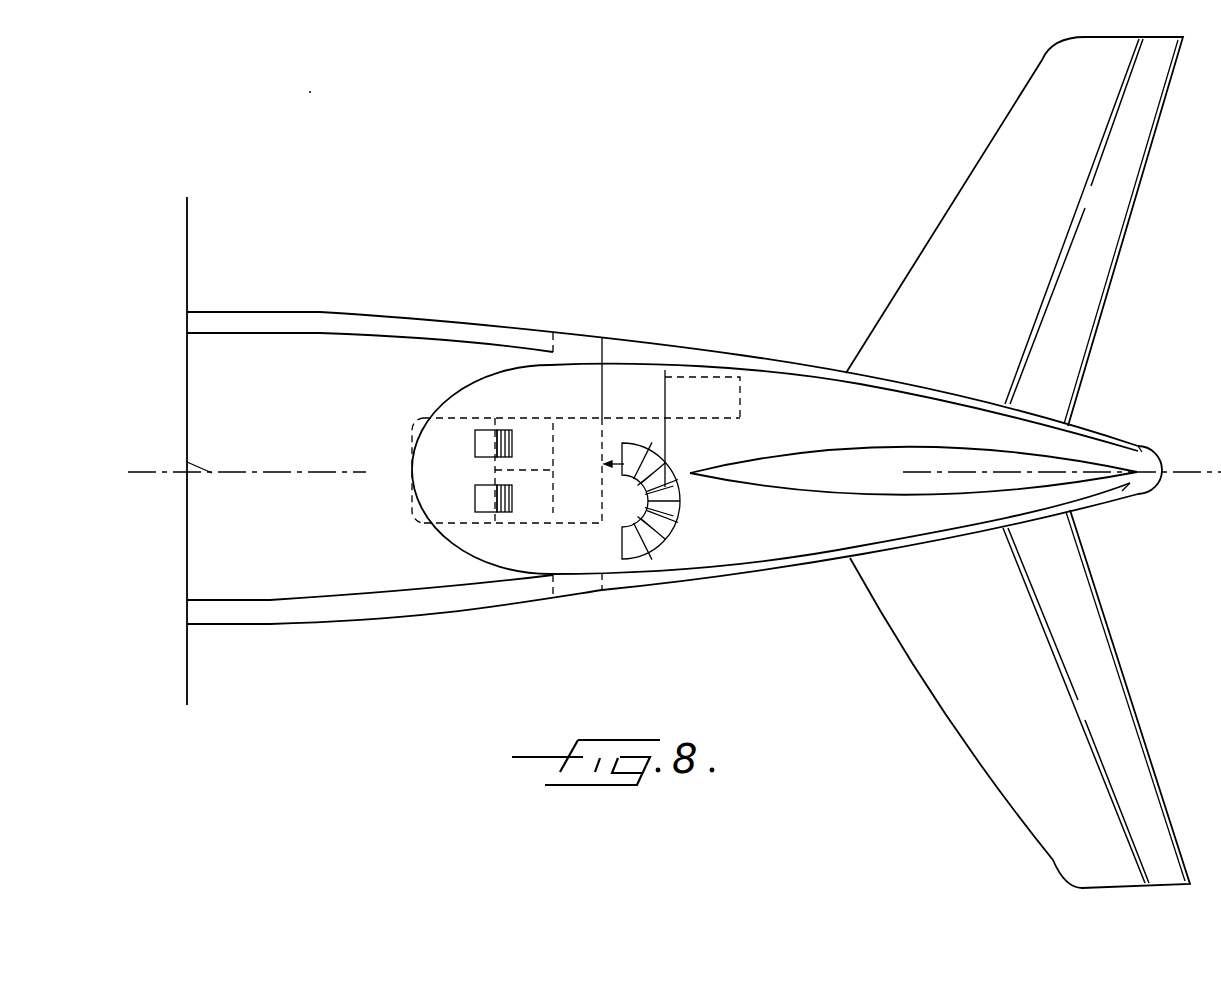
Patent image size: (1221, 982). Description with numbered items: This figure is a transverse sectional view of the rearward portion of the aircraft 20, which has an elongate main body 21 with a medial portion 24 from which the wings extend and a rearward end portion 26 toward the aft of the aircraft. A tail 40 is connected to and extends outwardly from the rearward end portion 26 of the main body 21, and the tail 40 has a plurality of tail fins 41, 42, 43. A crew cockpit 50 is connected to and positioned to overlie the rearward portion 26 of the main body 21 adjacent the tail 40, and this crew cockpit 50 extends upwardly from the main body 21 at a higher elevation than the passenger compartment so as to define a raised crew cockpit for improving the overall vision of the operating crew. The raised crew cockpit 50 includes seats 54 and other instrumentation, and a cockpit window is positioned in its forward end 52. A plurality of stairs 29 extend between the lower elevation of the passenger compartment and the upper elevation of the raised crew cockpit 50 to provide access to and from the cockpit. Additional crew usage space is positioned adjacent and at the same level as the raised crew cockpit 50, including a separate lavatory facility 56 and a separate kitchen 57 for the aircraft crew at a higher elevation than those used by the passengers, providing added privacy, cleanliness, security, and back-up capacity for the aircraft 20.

The aircraft 20 is at (564, 160).
The main body 21 is at (218, 311).
The medial portion 24 is at (250, 445).
The rearward end portion 26 is at (330, 428).
The stairs 29 is at (679, 502).
The tail 40 is at (1108, 386).
The tail fin 41 is at (948, 307).
The tail fin 42 is at (948, 642).
The tail fin 43 is at (1125, 485).
The crew cockpit 50 is at (570, 382).
The forward end 52 is at (472, 412).
The seats 54 is at (512, 440).
The lavatory facility 56 is at (720, 384).
The kitchen 57 is at (653, 382).